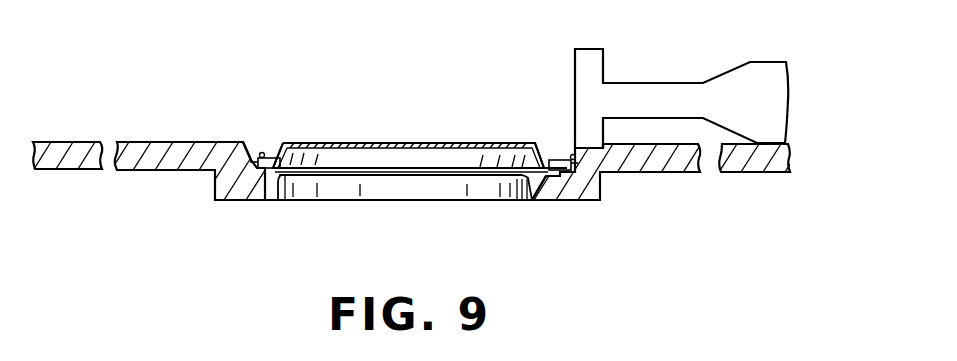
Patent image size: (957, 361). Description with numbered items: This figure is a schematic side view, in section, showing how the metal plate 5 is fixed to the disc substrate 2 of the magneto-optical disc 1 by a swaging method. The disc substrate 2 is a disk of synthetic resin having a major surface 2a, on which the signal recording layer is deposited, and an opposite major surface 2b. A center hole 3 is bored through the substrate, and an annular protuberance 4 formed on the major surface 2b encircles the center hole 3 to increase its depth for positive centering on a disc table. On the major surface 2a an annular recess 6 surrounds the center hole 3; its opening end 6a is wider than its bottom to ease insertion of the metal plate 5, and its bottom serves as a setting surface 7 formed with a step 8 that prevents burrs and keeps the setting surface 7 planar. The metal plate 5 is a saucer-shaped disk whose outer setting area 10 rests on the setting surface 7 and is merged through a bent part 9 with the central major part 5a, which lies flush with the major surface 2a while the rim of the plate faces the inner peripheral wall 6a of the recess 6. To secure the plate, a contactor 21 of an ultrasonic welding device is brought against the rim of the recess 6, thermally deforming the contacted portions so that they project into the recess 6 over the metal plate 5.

The magneto-optical disc 1 is at (803, 137).
The disc substrate 2 is at (32, 141).
The major surface 2a is at (88, 141).
The other major surface 2b is at (78, 171).
The center hole 3 is at (522, 200).
The annular protuberance 4 is at (600, 197).
The metal plate 5 is at (505, 143).
The central major part 5a is at (402, 143).
The annular recess 6 is at (253, 142).
The opening end / inner peripheral wall 6a is at (582, 193).
The setting surface 7 is at (261, 168).
The step 8 is at (285, 177).
The bent part 9 is at (545, 143).
The setting area 10 is at (557, 143).
The contactor 21 is at (600, 48).